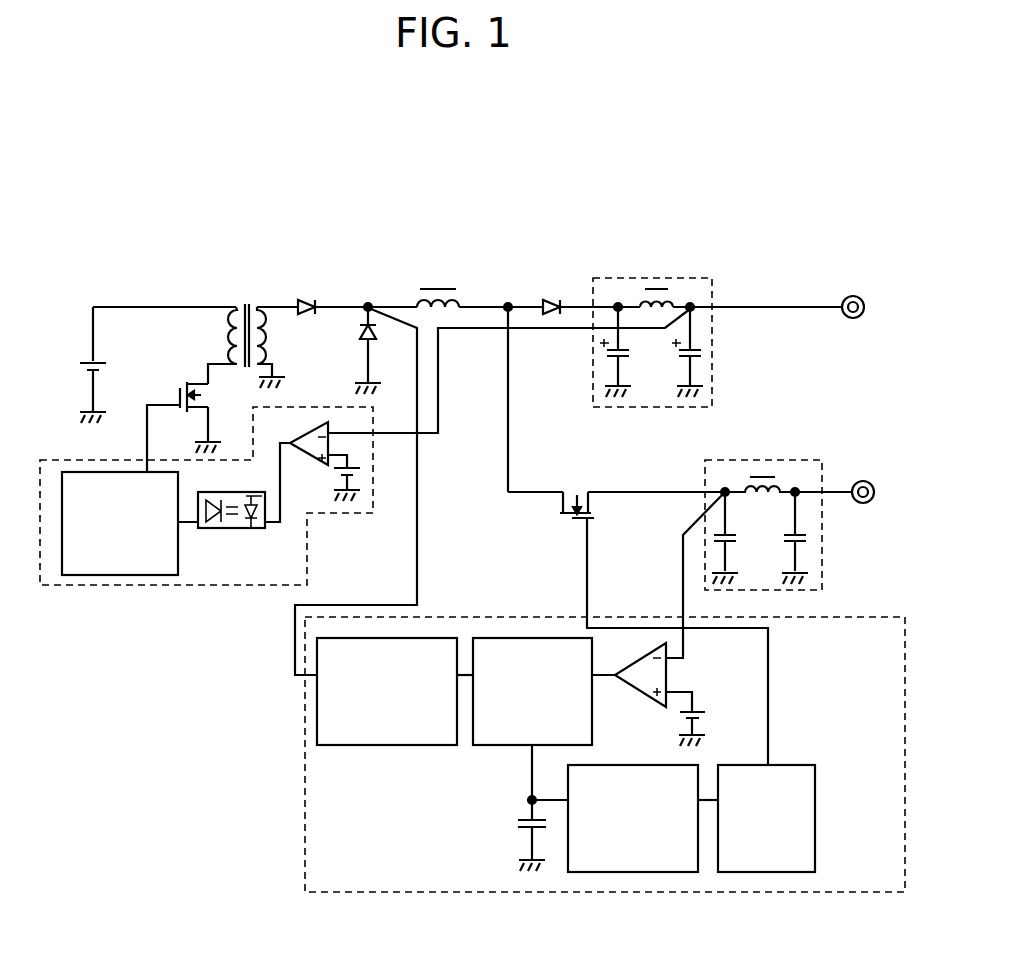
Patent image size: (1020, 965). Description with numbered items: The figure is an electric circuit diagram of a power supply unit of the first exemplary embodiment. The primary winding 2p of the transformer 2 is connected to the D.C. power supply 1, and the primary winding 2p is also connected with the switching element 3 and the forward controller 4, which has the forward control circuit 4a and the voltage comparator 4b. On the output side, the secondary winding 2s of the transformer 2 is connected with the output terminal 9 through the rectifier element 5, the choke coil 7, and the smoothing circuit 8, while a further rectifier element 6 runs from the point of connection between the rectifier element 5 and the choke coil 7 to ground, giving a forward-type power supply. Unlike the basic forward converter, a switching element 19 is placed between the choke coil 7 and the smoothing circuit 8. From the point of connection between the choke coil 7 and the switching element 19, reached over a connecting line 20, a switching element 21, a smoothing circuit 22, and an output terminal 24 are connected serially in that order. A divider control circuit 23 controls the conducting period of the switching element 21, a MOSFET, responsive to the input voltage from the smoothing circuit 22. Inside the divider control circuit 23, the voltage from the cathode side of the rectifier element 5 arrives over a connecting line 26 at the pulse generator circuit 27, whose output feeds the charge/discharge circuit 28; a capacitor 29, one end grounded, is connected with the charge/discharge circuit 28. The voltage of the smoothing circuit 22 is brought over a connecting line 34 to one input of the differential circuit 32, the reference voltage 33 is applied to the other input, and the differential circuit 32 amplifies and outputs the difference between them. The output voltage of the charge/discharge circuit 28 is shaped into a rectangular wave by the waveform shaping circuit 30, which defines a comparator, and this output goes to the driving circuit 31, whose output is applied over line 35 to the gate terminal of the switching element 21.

The D.C. power supply 1 is at (83, 345).
The transformer 2 is at (239, 306).
The primary winding 2p is at (228, 313).
The secondary winding 2s is at (262, 312).
The switching element 3 is at (178, 383).
The forward controller 4 is at (206, 531).
The forward control circuit 4a is at (165, 578).
The voltage comparator 4b is at (308, 453).
The rectifier element 5 is at (303, 297).
The rectifier element 6 is at (358, 318).
The choke coil 7 is at (438, 280).
The smoothing circuit 8 is at (660, 280).
The output terminal 9 is at (850, 295).
The switching element 19 is at (550, 292).
The connecting line 20 is at (510, 353).
The switching element 21 is at (570, 488).
The smoothing circuit 22 is at (748, 460).
The divider control circuit 23 is at (551, 787).
The output terminal 24 is at (853, 460).
The connecting line 26 is at (417, 470).
The pulse generator circuit 27 is at (337, 745).
The charge/discharge circuit 28 is at (497, 745).
The capacitor 29 is at (520, 835).
The waveform shaping circuit 30 is at (612, 873).
The driving circuit 31 is at (755, 873).
The differential circuit 32 is at (668, 671).
The reference voltage 33 is at (707, 715).
The connecting line 34 is at (683, 590).
The gate drive line 35 is at (583, 575).